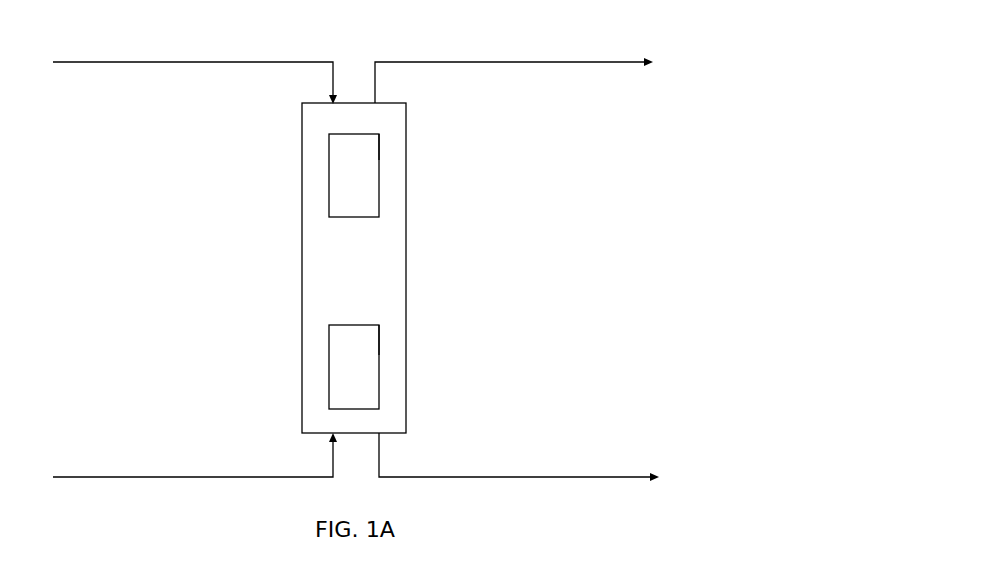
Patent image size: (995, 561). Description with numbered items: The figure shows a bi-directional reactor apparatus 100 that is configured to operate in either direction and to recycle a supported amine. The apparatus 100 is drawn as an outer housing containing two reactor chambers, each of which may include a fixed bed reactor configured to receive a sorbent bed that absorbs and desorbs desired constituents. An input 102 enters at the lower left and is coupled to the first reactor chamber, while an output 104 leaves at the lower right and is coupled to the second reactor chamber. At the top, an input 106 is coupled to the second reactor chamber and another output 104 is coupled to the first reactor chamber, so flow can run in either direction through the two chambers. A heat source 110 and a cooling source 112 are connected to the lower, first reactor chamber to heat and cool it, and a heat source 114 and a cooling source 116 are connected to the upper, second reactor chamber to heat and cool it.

The apparatus 100 is at (737, 40).
The input 102 is at (195, 472).
The output 104 is at (517, 285).
The input 106 is at (195, 83).
The heat source 110 is at (387, 392).
The cooling source 112 is at (387, 343).
The heat source 114 is at (387, 197).
The cooling source 116 is at (387, 147).